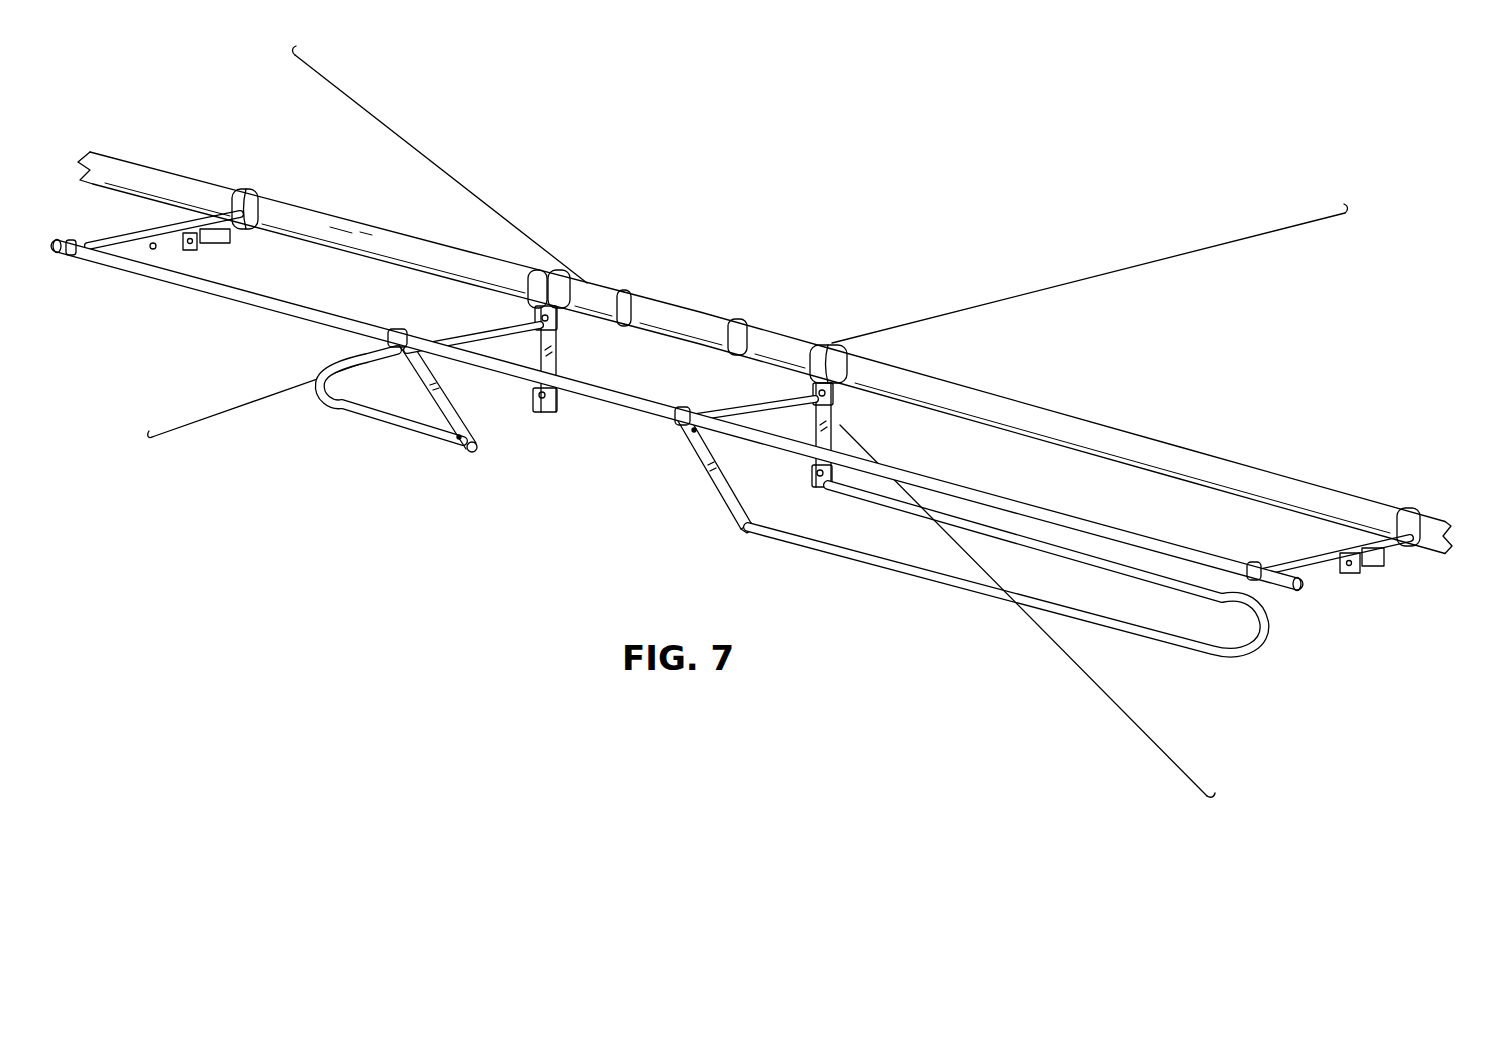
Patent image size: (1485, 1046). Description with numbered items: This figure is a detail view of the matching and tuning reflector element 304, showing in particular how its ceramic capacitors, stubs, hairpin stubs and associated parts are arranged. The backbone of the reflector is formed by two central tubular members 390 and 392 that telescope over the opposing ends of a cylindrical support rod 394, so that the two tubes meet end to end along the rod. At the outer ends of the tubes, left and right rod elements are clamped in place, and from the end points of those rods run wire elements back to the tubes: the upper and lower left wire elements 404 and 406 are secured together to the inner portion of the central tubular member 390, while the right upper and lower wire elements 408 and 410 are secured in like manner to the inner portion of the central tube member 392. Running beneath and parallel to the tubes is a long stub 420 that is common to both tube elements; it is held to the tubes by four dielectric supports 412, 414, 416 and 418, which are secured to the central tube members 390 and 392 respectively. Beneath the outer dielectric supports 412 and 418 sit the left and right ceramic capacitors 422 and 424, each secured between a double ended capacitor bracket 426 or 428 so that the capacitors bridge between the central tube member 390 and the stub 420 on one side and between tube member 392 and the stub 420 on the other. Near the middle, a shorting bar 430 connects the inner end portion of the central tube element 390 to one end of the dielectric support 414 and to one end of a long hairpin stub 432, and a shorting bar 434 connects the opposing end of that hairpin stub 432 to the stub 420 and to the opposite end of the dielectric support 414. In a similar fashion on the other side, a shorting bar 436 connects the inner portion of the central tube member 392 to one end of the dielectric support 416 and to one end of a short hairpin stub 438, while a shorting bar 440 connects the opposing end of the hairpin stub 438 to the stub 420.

The reflector element 304 is at (846, 158).
The central tubular member 390 is at (1007, 400).
The central tubular member 392 is at (320, 220).
The cylindrical support rod 394 is at (697, 322).
The upper left wire element 404 is at (1212, 246).
The lower left wire element 406 is at (1130, 717).
The right upper wire element 408 is at (430, 158).
The right lower wire element 410 is at (212, 417).
The dielectric support 412 is at (1315, 553).
The dielectric support 414 is at (777, 411).
The dielectric support 416 is at (497, 337).
The dielectric support 418 is at (147, 235).
The long stub 420 is at (640, 405).
The left ceramic capacitor 422 is at (1378, 566).
The right ceramic capacitor 424 is at (218, 244).
The double ended capacitor bracket 426 is at (1310, 575).
The double ended capacitor bracket 428 is at (156, 247).
The shorting bar 430 is at (832, 436).
The long hairpin stub 432 is at (930, 573).
The shorting bar 434 is at (700, 460).
The shorting bar 436 is at (557, 362).
The short hairpin stub 438 is at (397, 426).
The shorting bar 440 is at (447, 420).